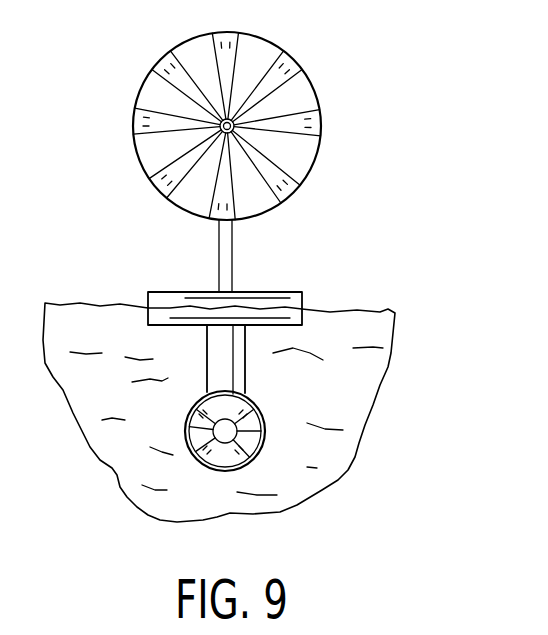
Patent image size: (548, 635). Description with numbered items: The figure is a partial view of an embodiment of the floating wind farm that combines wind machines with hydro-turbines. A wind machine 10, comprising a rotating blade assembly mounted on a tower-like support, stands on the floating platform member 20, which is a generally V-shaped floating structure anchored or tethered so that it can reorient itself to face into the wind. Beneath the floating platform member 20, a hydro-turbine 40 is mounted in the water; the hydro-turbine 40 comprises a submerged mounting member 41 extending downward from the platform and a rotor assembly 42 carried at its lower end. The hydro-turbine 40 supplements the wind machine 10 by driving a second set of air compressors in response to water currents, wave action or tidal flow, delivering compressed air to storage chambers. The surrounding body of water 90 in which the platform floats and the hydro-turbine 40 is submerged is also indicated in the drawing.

The wind machine 10 is at (342, 110).
The floating platform member 20 is at (295, 280).
The hydro-turbine 40 is at (330, 477).
The submerged mounting member 41 is at (245, 368).
The rotor assembly 42 is at (265, 423).
The body of water 90 is at (385, 306).